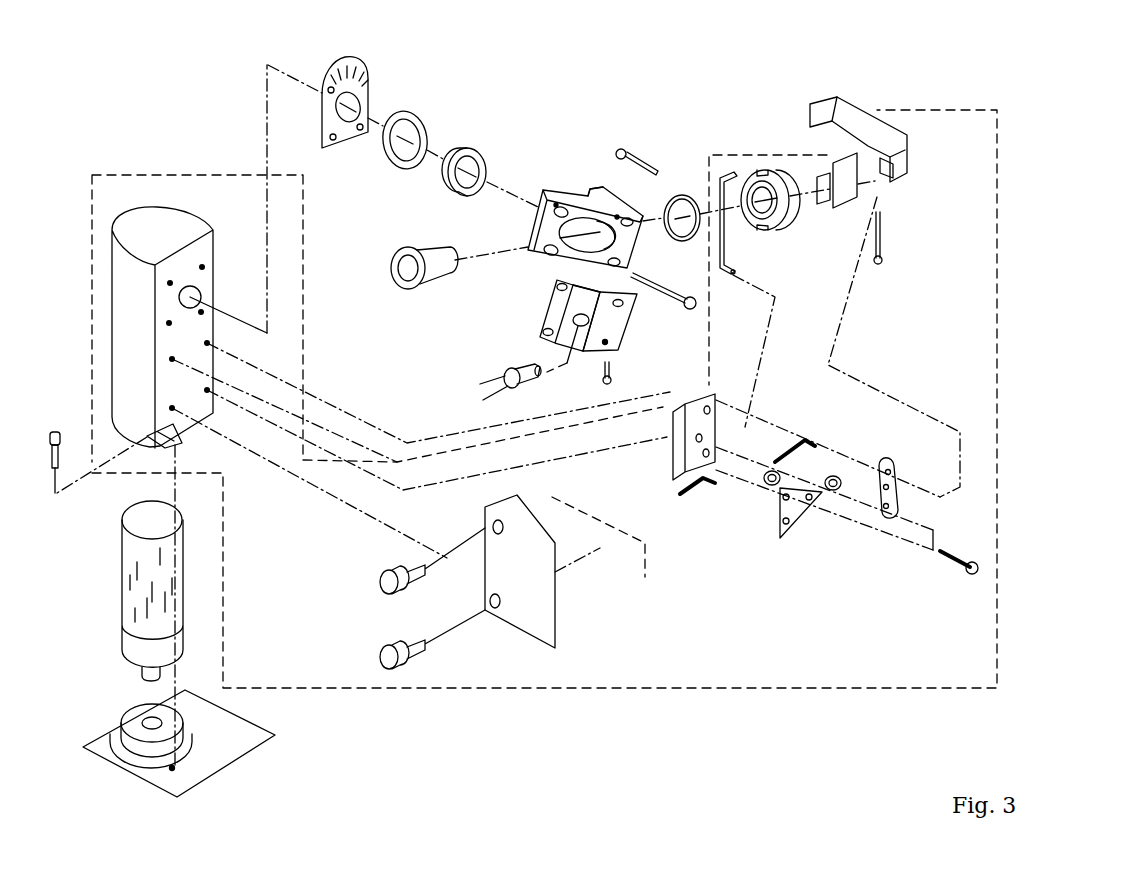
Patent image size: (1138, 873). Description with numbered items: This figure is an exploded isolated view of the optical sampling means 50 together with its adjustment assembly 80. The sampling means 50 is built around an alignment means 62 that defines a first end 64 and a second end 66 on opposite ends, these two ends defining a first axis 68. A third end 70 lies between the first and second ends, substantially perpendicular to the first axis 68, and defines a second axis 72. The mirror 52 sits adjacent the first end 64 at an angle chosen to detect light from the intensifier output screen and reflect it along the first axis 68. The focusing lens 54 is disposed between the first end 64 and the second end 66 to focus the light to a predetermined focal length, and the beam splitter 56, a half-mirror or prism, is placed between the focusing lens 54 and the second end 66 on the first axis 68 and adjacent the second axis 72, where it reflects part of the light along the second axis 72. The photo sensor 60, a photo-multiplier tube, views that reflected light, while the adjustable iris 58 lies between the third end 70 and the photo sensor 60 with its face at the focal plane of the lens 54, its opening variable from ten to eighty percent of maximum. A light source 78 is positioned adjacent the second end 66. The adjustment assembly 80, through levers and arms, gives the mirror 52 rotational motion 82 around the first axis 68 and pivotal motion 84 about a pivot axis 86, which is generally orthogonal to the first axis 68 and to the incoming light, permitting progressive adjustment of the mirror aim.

The optical sampling means 50 is at (613, 128).
The mirror 52 is at (820, 100).
The focusing lens 54 is at (438, 250).
The beam splitter 56 is at (637, 322).
The adjustable iris 58 is at (470, 148).
The photo sensor 60 is at (128, 557).
The alignment means 62 is at (603, 187).
The first end 64 is at (638, 249).
The second end 66 is at (535, 328).
The first axis 68 is at (648, 222).
The third end 70 is at (603, 223).
The second axis 72 is at (292, 80).
The light source 78 is at (510, 372).
The adjustment assembly 80 is at (675, 700).
The rotational motion 82 is at (418, 108).
The pivotal motion 84 is at (909, 125).
The pivot axis 86 is at (883, 190).